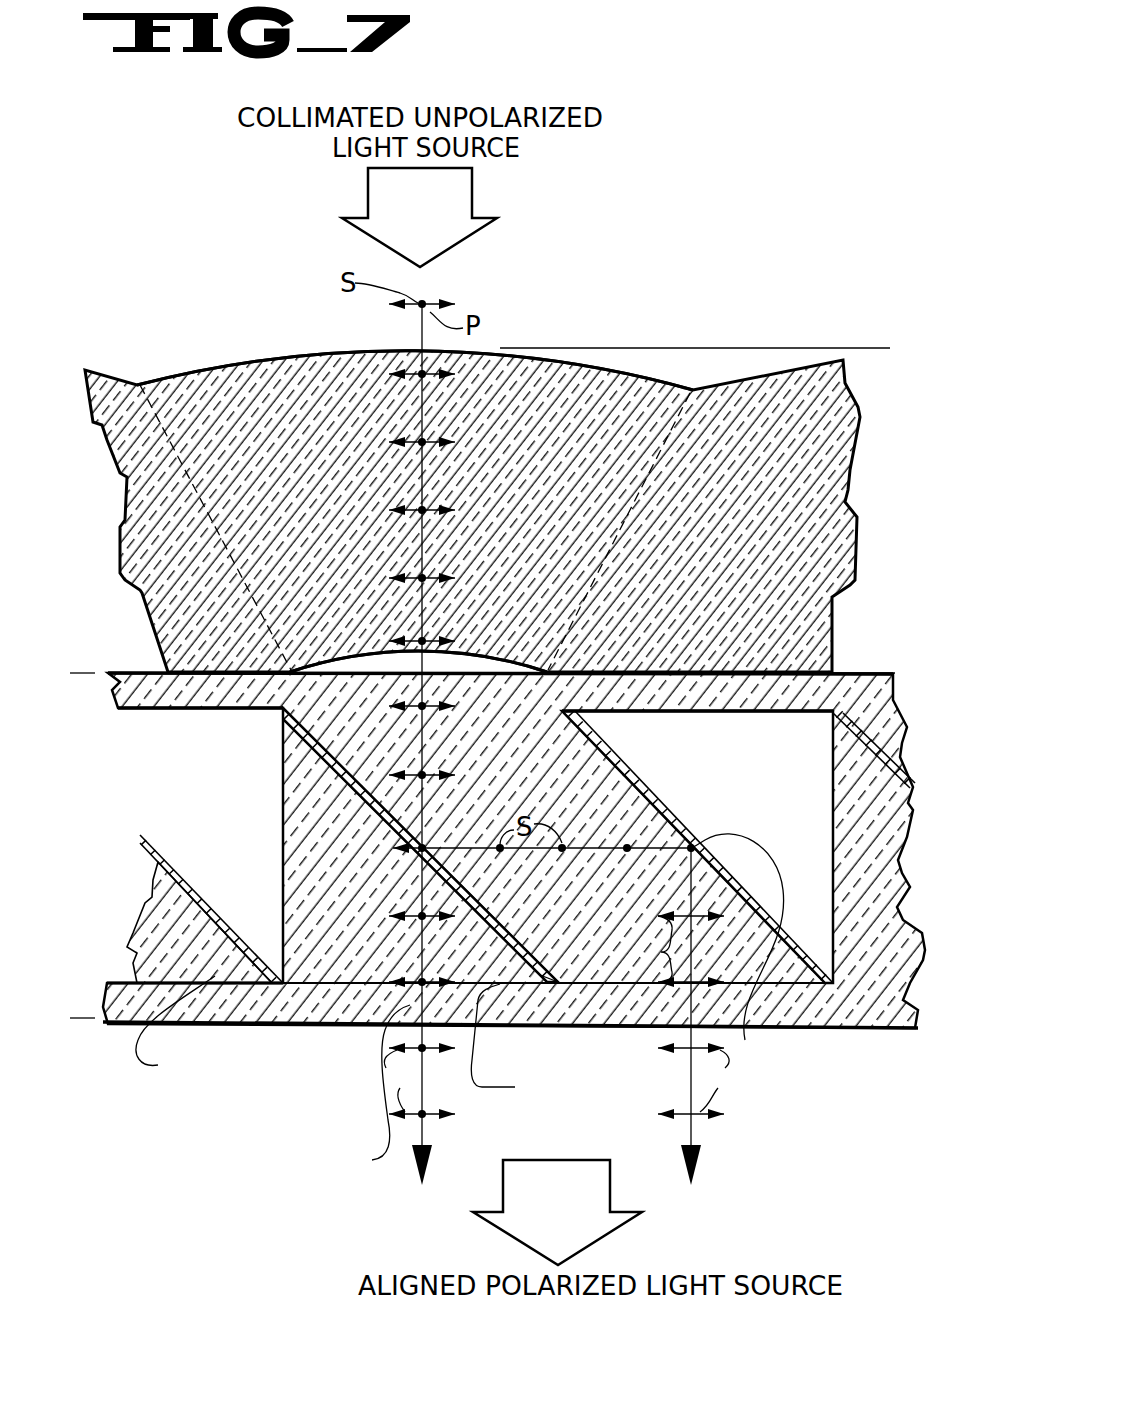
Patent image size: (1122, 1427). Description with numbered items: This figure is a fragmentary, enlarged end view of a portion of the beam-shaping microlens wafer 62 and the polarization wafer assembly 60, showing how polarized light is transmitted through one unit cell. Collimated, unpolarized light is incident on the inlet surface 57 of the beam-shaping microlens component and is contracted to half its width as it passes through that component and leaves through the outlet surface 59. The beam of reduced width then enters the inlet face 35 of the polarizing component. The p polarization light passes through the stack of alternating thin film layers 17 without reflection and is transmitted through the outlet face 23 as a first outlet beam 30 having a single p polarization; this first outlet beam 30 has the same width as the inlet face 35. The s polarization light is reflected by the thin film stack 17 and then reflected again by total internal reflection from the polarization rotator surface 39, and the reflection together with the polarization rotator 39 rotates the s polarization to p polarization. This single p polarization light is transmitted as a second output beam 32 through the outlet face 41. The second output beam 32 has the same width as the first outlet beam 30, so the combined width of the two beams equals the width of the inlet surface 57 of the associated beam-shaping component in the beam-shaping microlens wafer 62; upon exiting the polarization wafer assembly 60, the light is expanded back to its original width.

The beam-shaping microlens wafer 62 is at (877, 672).
The inlet surface of the beam-shaping microlens component 57 is at (228, 358).
The outlet surface of the beam-shaping microlens component 59 is at (499, 666).
The inlet face of the polarizing component 35 is at (463, 675).
The stack of alternating thin film layers 17 is at (295, 738).
The polarization rotator surface 39 is at (200, 891).
The outlet face 23 is at (547, 982).
The outlet face 41 is at (600, 978).
The first outlet beam 30 is at (446, 1176).
The second output beam 32 is at (715, 1176).
The polarization wafer assembly 60 is at (83, 673).